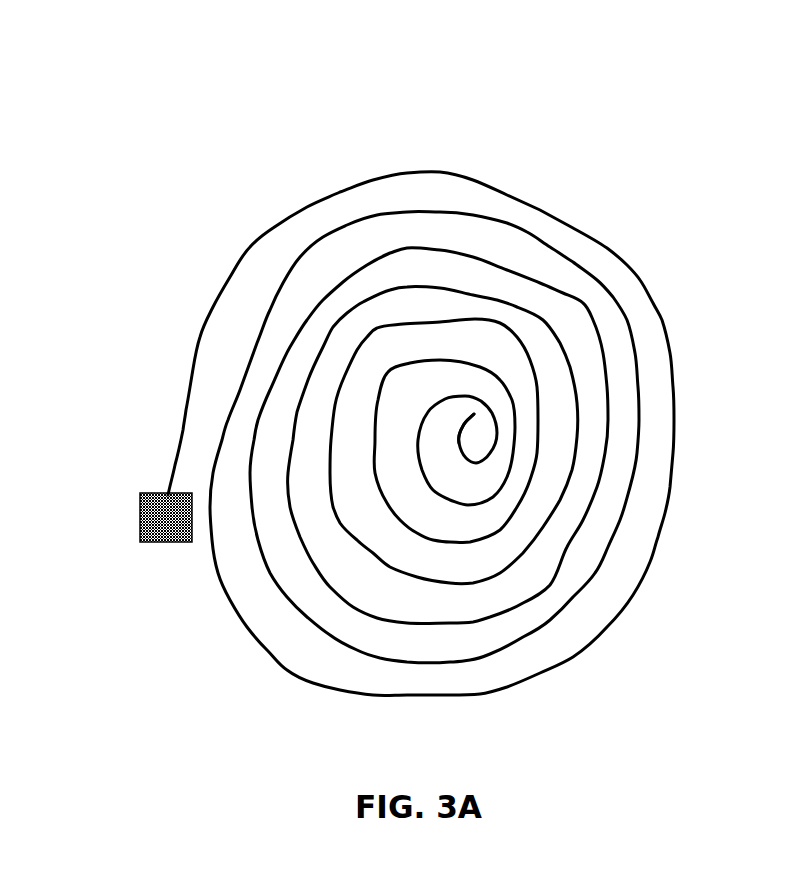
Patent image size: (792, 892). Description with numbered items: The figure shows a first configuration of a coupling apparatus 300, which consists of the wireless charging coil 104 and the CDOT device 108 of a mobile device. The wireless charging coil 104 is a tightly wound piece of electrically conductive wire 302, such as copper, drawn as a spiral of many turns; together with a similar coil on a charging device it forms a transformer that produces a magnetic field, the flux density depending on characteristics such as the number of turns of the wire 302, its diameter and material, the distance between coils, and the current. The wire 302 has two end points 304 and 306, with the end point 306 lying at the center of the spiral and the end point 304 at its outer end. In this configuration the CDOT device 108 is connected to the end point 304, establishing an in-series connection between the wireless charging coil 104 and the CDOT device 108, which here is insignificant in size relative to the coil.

The coupling apparatus 300 is at (429, 376).
The wireless charging coil 104 is at (422, 141).
The electrically conductive wire 302 is at (517, 197).
The end point 306 is at (488, 413).
The CDOT device 108 is at (168, 493).
The end point 304 is at (147, 578).